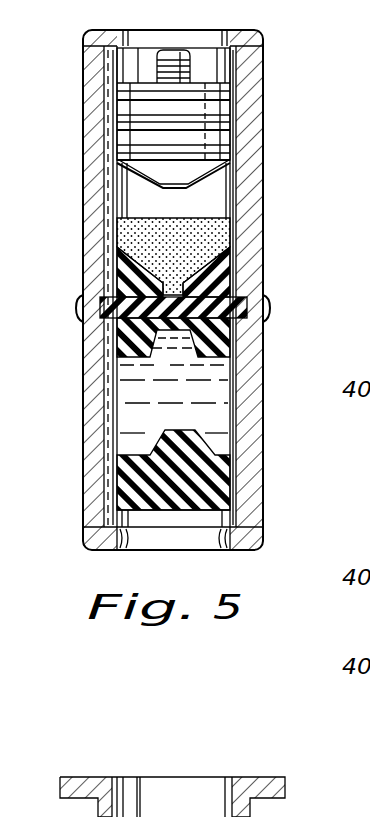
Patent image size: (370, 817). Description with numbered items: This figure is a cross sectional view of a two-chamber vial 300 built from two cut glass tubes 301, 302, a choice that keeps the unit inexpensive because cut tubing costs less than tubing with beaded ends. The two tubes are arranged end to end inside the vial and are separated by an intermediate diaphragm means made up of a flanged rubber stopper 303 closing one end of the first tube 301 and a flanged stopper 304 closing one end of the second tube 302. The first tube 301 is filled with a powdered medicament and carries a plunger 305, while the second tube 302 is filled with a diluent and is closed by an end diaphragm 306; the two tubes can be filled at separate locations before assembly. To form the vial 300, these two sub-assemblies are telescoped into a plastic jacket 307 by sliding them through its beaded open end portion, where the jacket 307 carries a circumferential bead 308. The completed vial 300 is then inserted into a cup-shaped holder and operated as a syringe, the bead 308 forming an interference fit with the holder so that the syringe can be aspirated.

The two-chamber vial 300 is at (268, 257).
The cut glass tube 301 is at (255, 170).
The cut glass tube 302 is at (250, 420).
The flanged rubber stopper 303 is at (248, 284).
The flanged stopper 304 is at (250, 322).
The plunger 305 is at (250, 100).
The end diaphragm 306 is at (245, 480).
The plastic jacket 307 is at (90, 152).
The circumferential bead 308 is at (78, 308).